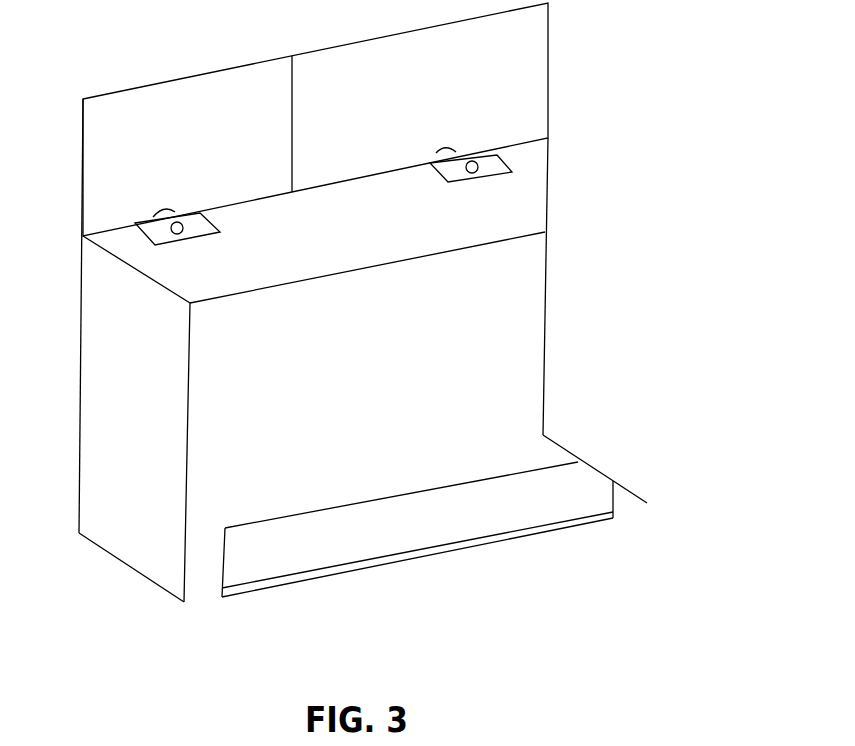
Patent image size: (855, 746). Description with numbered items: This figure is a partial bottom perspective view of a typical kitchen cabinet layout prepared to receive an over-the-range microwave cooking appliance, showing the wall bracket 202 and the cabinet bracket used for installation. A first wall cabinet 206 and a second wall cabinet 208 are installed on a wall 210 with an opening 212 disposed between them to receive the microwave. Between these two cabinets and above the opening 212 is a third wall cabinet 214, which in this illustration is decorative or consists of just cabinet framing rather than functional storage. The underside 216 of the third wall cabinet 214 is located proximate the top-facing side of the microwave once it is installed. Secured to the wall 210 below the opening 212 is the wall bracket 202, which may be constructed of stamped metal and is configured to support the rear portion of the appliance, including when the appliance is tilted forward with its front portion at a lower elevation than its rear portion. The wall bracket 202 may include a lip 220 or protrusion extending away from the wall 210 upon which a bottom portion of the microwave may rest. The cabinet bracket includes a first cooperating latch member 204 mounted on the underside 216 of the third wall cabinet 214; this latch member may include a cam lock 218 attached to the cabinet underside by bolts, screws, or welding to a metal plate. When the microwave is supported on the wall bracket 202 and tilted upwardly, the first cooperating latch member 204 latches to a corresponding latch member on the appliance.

The wall bracket 202 is at (258, 568).
The first cooperating latch member 204 is at (185, 272).
The first wall cabinet 206 is at (152, 570).
The second wall cabinet 208 is at (557, 431).
The wall 210 is at (413, 445).
The opening 212 is at (484, 318).
The third wall cabinet 214 is at (303, 167).
The underside 216 is at (313, 253).
The cam lock 218 is at (153, 216).
The lip 220 is at (308, 575).